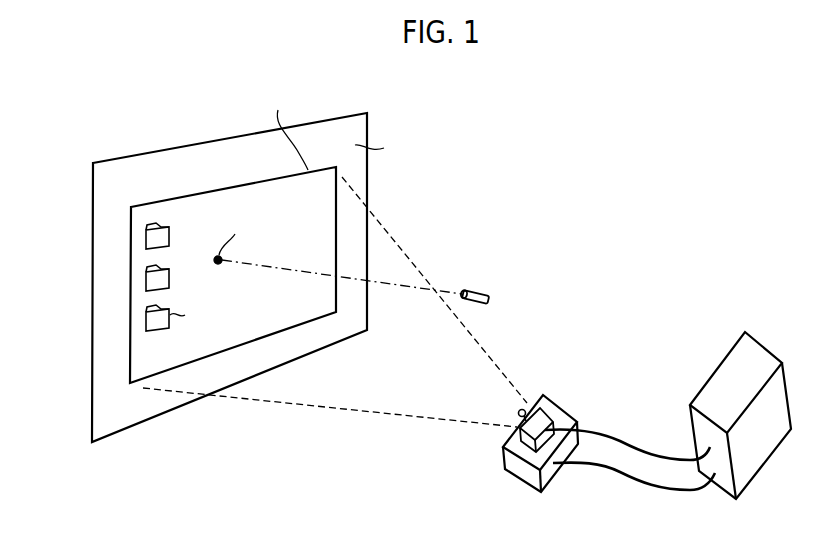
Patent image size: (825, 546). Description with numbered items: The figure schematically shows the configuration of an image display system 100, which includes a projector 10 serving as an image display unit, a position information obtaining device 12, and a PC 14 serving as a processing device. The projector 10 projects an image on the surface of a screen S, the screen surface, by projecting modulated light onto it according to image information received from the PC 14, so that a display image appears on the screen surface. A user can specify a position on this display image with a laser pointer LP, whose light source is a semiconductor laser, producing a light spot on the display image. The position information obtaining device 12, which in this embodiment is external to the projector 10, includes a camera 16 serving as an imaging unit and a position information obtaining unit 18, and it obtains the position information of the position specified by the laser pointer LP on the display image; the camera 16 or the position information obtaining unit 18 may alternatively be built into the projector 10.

The screen S is at (364, 101).
The laser pointer LP is at (476, 291).
The projector 10 is at (560, 408).
The position information obtaining device 12 is at (466, 367).
The PC 14 is at (717, 365).
The camera 16 is at (519, 410).
The position information obtaining unit 18 is at (519, 429).
The image display system 100 is at (616, 503).